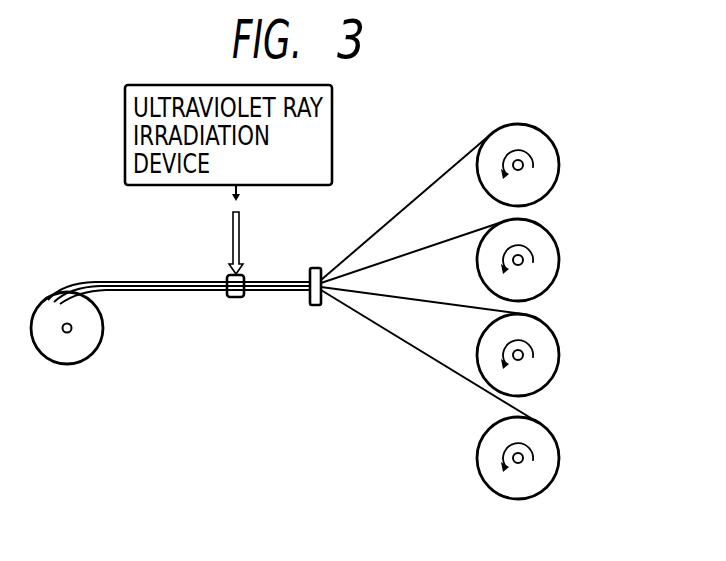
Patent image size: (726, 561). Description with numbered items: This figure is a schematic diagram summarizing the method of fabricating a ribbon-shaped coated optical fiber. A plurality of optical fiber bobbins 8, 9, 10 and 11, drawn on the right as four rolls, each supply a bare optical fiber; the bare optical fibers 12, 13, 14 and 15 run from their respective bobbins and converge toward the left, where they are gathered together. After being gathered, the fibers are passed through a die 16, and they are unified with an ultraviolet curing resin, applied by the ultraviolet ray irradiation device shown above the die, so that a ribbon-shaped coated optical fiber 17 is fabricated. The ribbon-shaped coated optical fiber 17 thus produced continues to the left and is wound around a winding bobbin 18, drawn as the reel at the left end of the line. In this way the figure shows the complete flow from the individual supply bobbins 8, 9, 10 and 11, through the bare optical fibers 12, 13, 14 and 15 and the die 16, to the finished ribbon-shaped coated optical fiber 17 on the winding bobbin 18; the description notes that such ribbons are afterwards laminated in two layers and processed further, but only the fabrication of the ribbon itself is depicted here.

The optical fiber bobbin 8 is at (548, 170).
The optical fiber bobbin 9 is at (548, 260).
The optical fiber bobbin 10 is at (548, 350).
The optical fiber bobbin 11 is at (546, 453).
The bare optical fiber 12 is at (423, 192).
The bare optical fiber 13 is at (455, 235).
The bare optical fiber 14 is at (457, 302).
The bare optical fiber 15 is at (448, 362).
The die 16 is at (236, 297).
The ribbon-shaped coated optical fiber 17 is at (196, 292).
The winding bobbin 18 is at (102, 334).